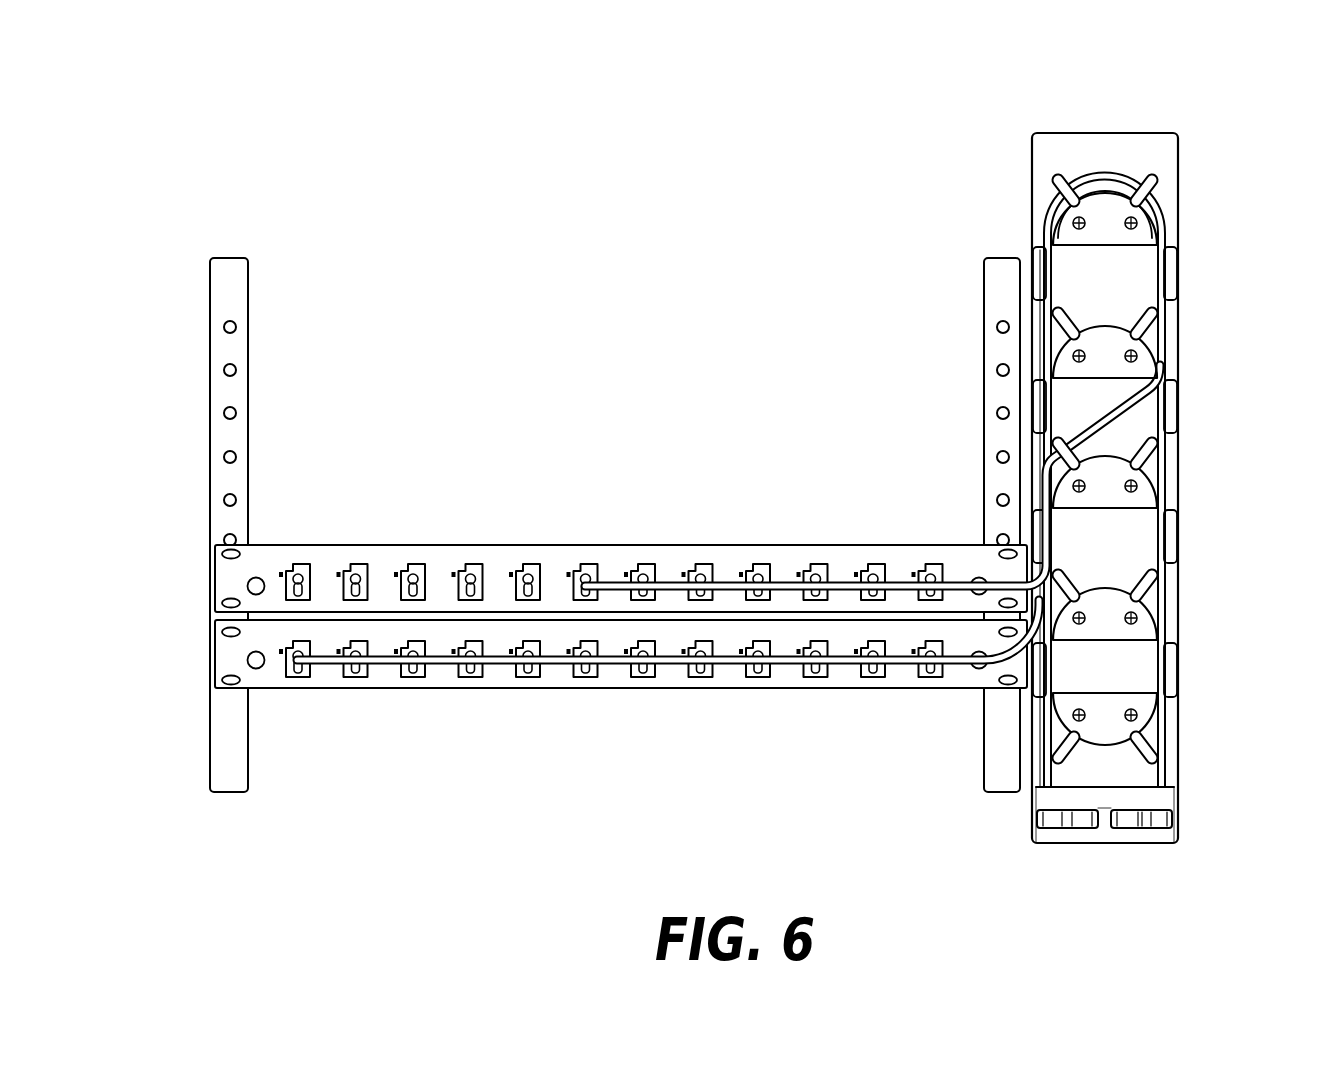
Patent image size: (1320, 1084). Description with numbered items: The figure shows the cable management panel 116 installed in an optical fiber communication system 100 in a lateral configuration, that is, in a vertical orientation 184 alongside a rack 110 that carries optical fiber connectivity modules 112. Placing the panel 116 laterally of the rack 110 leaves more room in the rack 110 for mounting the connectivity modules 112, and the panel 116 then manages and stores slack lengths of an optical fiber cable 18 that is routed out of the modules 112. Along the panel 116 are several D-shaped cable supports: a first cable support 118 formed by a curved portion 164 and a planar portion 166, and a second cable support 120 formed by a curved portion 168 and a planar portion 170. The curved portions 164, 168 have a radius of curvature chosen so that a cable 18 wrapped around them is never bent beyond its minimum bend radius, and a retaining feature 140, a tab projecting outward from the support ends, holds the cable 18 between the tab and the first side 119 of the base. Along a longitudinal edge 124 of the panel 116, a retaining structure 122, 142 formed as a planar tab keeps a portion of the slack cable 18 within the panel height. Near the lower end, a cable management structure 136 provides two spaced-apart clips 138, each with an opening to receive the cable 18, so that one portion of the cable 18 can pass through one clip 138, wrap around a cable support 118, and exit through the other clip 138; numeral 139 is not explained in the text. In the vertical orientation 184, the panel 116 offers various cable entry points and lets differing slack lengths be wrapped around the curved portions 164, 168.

The optical fiber communication system 100 is at (539, 166).
The rack 110 is at (203, 302).
The optical fiber connectivity modules 112 is at (238, 582).
The vertical orientation 184 is at (1012, 92).
The retaining structure 142 is at (1044, 270).
The curved portion 164 is at (1106, 192).
The retaining feature 140 is at (1150, 186).
The first cable support 118 is at (1144, 225).
The optical fiber cable 18 is at (1163, 244).
The planar portion 166 is at (1100, 250).
The retaining structure 122 is at (1178, 295).
The panel 116 is at (1178, 340).
The longitudinal edge 124 is at (1186, 452).
The first side 119 is at (1163, 599).
The second cable support 120 is at (1155, 720).
The curved portion 168 is at (1108, 745).
The cable management structure 136 is at (1188, 823).
The clip 138 is at (1070, 828).
The connector slot 139 is at (1063, 804).
The planar portion 170 is at (1077, 690).